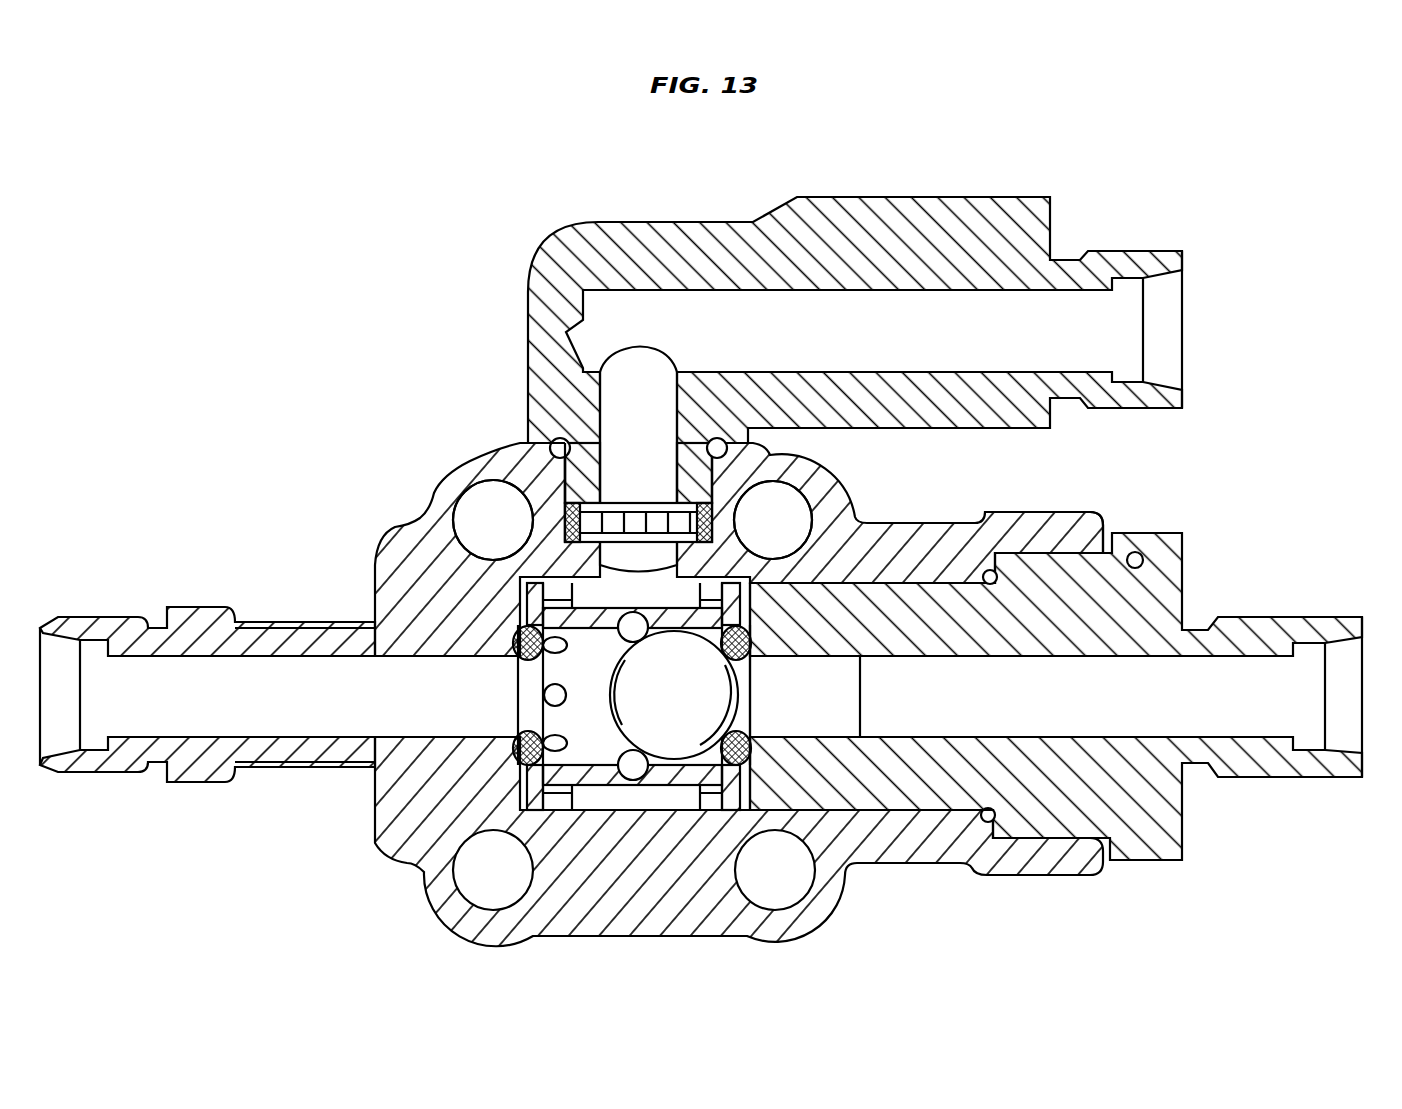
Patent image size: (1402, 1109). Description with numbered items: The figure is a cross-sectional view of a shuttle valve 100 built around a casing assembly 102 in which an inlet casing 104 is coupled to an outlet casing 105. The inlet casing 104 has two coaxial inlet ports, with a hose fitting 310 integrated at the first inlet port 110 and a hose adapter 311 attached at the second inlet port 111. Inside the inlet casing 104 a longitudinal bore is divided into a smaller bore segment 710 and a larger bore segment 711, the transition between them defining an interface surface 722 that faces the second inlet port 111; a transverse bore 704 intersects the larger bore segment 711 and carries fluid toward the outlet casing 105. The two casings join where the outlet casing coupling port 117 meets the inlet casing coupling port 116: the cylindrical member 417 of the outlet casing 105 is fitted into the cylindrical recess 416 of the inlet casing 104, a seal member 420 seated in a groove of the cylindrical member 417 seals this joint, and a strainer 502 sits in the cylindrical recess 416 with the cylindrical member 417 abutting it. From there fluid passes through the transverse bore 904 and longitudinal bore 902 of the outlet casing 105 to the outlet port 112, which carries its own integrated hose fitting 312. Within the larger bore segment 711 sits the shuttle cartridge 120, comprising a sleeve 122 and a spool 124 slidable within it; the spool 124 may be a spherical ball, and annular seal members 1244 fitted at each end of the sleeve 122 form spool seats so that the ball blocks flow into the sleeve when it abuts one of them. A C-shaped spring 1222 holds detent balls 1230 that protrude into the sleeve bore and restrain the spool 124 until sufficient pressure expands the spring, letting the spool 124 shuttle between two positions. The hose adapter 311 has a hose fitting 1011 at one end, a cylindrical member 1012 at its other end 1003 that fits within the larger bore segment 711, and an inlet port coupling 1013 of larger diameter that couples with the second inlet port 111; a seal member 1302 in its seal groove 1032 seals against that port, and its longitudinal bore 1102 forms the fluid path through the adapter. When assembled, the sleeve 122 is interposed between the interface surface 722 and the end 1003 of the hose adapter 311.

The shuttle valve 100 is at (203, 232).
The casing assembly 102 is at (318, 838).
The inlet casing 104 is at (640, 936).
The outlet casing 105 is at (839, 350).
The inlet port 110 is at (198, 607).
The inlet port 111 is at (1062, 877).
The outlet port 112 is at (1012, 205).
The inlet casing coupling port 116 is at (525, 465).
The outlet casing coupling port 117 is at (585, 455).
The shuttle cartridge 120 is at (772, 660).
The sleeve 122 is at (673, 803).
The spool 124 is at (715, 700).
The hose fitting 310 is at (92, 617).
The hose adapter 311 is at (1167, 862).
The hose fitting 312 is at (1148, 250).
The cylindrical recess 416 is at (522, 514).
The cylindrical member 417 is at (690, 487).
The seal member 420 is at (708, 448).
The strainer 502 is at (742, 511).
The transverse bore 704 is at (605, 568).
The bore segment 710 is at (316, 657).
The bore segment 711 is at (850, 812).
The interface surface 722 is at (522, 540).
The longitudinal bore 902 is at (812, 292).
The transverse bore 904 is at (677, 400).
The end 1003 is at (736, 540).
The hose fitting 1011 is at (1305, 617).
The cylindrical member 1012 is at (900, 598).
The inlet port coupling 1013 is at (1085, 565).
The seal groove 1032 is at (1008, 545).
The longitudinal bore 1102 is at (1090, 737).
The spring 1222 is at (612, 762).
The detent balls 1230 is at (633, 757).
The seal member 1244 is at (516, 748).
The seal member 1302 is at (988, 568).